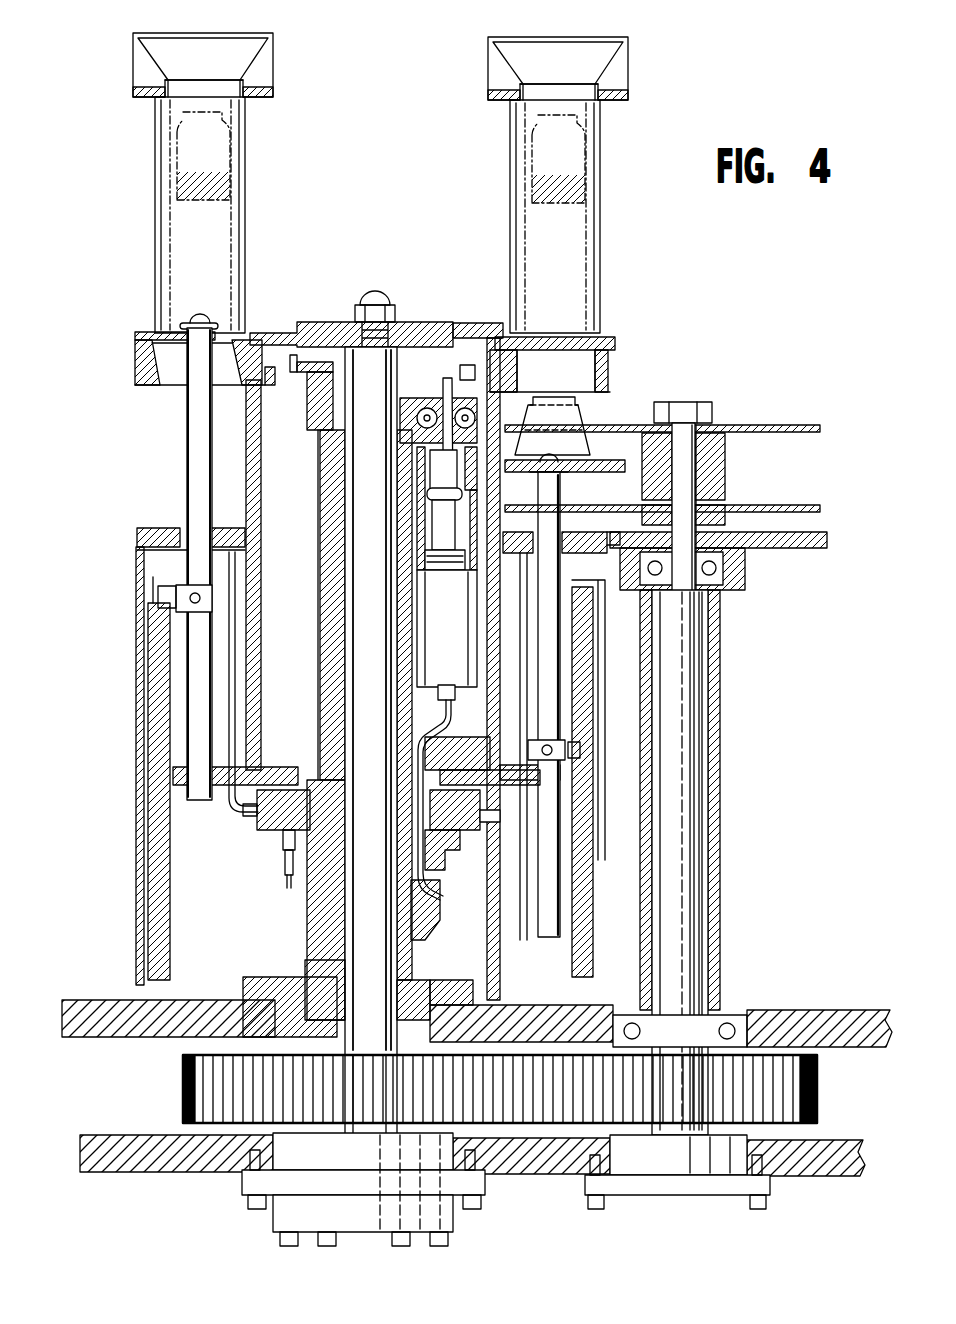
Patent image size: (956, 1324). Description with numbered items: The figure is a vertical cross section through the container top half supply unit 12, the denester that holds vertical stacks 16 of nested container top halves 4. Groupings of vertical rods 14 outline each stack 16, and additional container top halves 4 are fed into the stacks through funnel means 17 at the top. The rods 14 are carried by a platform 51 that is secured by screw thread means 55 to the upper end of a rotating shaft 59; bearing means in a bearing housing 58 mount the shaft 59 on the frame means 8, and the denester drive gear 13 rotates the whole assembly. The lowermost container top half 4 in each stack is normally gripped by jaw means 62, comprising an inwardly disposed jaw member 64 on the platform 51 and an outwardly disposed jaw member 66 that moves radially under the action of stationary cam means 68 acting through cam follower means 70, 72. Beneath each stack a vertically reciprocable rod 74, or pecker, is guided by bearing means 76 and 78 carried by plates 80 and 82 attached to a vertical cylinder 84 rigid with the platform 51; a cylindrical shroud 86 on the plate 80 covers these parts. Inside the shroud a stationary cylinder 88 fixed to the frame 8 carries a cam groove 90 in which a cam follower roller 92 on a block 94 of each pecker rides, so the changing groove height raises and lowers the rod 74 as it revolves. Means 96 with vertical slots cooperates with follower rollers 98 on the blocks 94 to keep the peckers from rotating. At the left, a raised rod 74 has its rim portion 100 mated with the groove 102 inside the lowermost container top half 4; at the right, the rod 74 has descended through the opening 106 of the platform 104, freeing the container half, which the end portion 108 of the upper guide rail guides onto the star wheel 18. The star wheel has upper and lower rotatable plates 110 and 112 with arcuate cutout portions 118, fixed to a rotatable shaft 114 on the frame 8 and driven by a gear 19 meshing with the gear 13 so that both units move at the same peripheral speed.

The container top half 4 is at (151, 336).
The frame means 8 is at (820, 1022).
The container top half supply unit 12 is at (378, 262).
The denester drive gear 13 is at (183, 1090).
The vertical rods 14 is at (162, 237).
The stack 16 is at (214, 155).
The funnel means 17 is at (212, 48).
The star wheel 18 is at (760, 428).
The gear 19 is at (818, 1098).
The platform 51 is at (300, 328).
The screw thread means 55 is at (390, 306).
The bearing housing 58 is at (440, 1225).
The rotating shaft 59 is at (377, 541).
The jaw means 62 is at (610, 371).
The inwardly disposed jaw member 64 is at (496, 330).
The outwardly disposed jaw member 66 is at (135, 368).
The cam means 68 is at (300, 378).
The cam follower means 70 is at (265, 380).
The cam follower means 72 is at (458, 370).
The vertically reciprocable rod 74 is at (188, 456).
The bearing means 76 is at (240, 510).
The bearing means 78 is at (215, 800).
The plate 80 is at (232, 540).
The plate 82 is at (262, 822).
The vertical cylinder 84 is at (262, 612).
The cylindrical shroud 86 is at (137, 706).
The stationary cylinder 88 is at (150, 966).
The cam groove 90 is at (176, 602).
The cam follower roller 92 is at (578, 762).
The block 94 is at (555, 748).
The anti-rotation means 96 is at (142, 548).
The follower roller 98 is at (158, 597).
The rim portion 100 is at (182, 374).
The groove 102 is at (220, 320).
The platform 104 is at (588, 474).
The opening 106 is at (548, 478).
The end portion of upper guide rail 108 is at (580, 440).
The upper rotatable plate 110 is at (740, 430).
The lower rotatable plate 112 is at (758, 512).
The rotatable shaft 114 is at (660, 796).
The arcuate cutout portions 118 is at (812, 430).